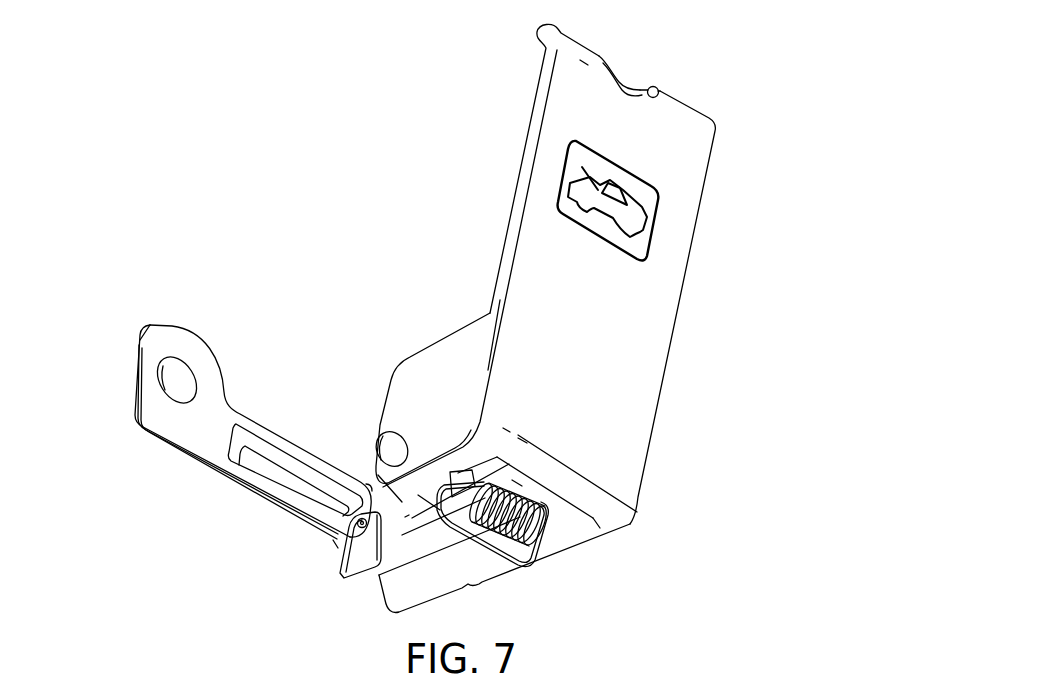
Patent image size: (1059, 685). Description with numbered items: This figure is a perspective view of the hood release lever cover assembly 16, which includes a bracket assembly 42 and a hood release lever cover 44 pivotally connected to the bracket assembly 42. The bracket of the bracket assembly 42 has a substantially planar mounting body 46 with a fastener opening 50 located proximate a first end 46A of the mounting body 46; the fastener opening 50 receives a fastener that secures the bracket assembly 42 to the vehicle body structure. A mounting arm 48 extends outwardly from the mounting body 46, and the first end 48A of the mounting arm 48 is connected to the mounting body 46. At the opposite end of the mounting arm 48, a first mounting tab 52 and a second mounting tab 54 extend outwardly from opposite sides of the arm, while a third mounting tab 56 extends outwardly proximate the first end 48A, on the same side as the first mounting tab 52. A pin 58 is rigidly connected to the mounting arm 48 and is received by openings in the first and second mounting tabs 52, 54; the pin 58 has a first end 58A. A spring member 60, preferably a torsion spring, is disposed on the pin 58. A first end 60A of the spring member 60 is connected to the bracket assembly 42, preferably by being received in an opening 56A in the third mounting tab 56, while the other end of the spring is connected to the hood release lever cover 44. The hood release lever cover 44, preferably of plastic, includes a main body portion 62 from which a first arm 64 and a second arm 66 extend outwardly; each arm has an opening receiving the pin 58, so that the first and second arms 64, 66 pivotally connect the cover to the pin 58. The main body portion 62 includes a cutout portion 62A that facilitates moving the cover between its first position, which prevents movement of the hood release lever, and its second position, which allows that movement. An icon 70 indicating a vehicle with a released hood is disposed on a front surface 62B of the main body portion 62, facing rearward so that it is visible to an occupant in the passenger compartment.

The hood release lever cover assembly 16 is at (246, 195).
The bracket assembly 42 is at (181, 451).
The hood release lever cover 44 is at (660, 398).
The mounting body 46 is at (255, 425).
The first end of the mounting body 46A is at (137, 385).
The mounting arm 48 is at (440, 600).
The first end of the mounting arm 48A is at (333, 540).
The fastener opening 50 is at (190, 371).
The first mounting tab 52 is at (425, 502).
The second mounting tab 54 is at (542, 557).
The third mounting tab 56 is at (356, 550).
The opening in the third tab 56A is at (370, 487).
The pin 58 is at (466, 492).
The first end of the pin 58A is at (377, 440).
The spring member 60 is at (523, 497).
The first end of the spring member 60A is at (355, 523).
The main body portion 62 is at (672, 245).
The cutout portion 62A is at (629, 82).
The front surface 62B is at (627, 337).
The first arm 64 is at (428, 378).
The second arm 66 is at (543, 558).
The icon 70 is at (643, 200).